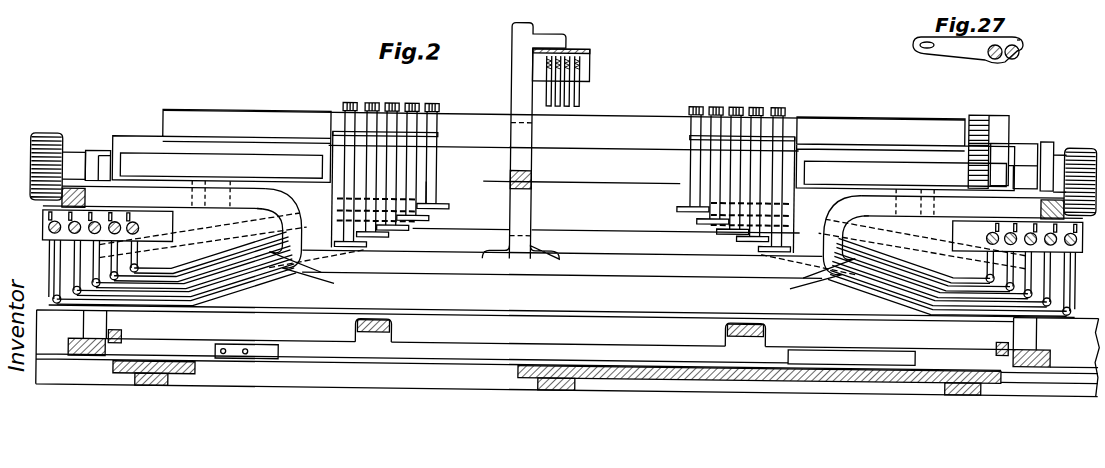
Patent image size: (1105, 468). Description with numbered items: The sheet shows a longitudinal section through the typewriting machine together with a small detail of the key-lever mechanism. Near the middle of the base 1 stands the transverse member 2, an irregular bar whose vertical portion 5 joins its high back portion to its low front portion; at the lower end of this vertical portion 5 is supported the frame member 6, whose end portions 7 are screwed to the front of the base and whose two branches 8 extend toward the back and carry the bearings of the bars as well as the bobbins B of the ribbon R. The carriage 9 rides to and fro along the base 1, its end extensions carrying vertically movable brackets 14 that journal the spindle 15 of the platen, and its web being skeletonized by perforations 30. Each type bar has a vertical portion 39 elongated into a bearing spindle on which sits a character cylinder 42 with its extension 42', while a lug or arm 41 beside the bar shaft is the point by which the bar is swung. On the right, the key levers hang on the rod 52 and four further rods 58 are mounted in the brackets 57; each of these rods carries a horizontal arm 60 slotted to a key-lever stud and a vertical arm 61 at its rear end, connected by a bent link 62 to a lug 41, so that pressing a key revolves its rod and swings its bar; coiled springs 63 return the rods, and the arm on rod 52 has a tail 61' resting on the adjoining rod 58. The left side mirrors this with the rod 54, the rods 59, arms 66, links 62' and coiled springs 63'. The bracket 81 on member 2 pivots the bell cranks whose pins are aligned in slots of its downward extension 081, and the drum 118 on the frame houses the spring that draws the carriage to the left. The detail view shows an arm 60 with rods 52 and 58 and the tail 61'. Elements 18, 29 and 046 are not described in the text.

In FIG. 2, the base 1 is at (385, 375).
In FIG. 2, the transverse member 2 is at (510, 56).
In FIG. 2, the vertical portion 5 is at (510, 148).
In FIG. 2, the frame member 6 is at (479, 270).
In FIG. 2, the end portions 7 is at (38, 203).
In FIG. 2, the branches 8 is at (268, 199).
In FIG. 2, the carriage 9 is at (176, 345).
In FIG. 2, the brackets 14 is at (99, 152).
In FIG. 2, the spindle 15 is at (70, 164).
In FIG. 2, the stop block 18 is at (124, 328).
In FIG. 2, the rack mechanism 29 is at (1028, 148).
In FIG. 2, the perforations 30 is at (72, 370).
In FIG. 2, the vertical portion 39 is at (430, 192).
In FIG. 2, the lug or arm 41 is at (392, 222).
In FIG. 2, the cylinder 42 is at (539, 174).
In FIG. 2, the extension 42' is at (577, 132).
In FIG. 2, the guide frame 046 is at (345, 130).
In FIG. 27, the rod 52 is at (993, 60).
In FIG. 2, the rod 54 is at (136, 224).
In FIG. 2, the brackets 57 is at (562, 233).
In FIG. 2, the rods 58 is at (1054, 230).
In FIG. 27, the rods 58 is at (1012, 60).
In FIG. 2, the rods 59 is at (98, 224).
In FIG. 27, the horizontal arm 60 is at (958, 60).
In FIG. 2, the vertical arm 61 is at (1044, 281).
In FIG. 27, the tail 61' is at (1042, 32).
In FIG. 2, the link 62 is at (949, 297).
In FIG. 2, the links 62' is at (174, 283).
In FIG. 2, the coiled springs 63 is at (1044, 239).
In FIG. 2, the coiled springs 63' is at (136, 204).
In FIG. 2, the arms 66 is at (58, 272).
In FIG. 2, the bracket 81 is at (588, 47).
In FIG. 2, the downward extension 081 is at (588, 64).
In FIG. 2, the drum 118 is at (826, 344).
In FIG. 2, the bobbins B is at (198, 139).
In FIG. 2, the ribbon R is at (645, 172).